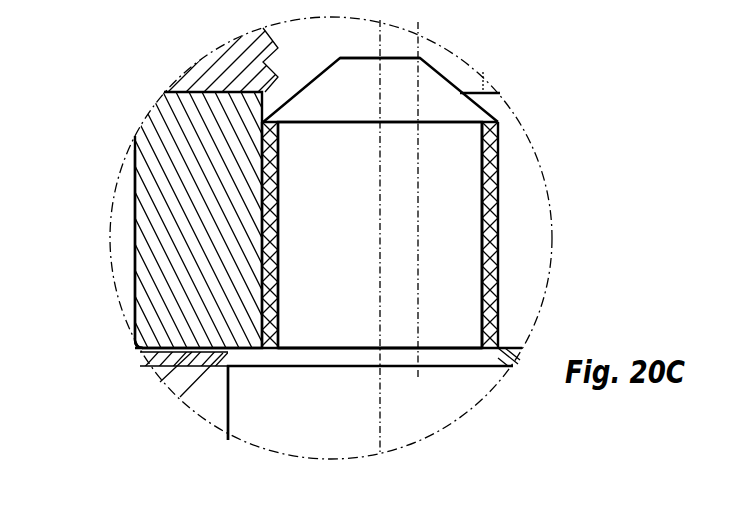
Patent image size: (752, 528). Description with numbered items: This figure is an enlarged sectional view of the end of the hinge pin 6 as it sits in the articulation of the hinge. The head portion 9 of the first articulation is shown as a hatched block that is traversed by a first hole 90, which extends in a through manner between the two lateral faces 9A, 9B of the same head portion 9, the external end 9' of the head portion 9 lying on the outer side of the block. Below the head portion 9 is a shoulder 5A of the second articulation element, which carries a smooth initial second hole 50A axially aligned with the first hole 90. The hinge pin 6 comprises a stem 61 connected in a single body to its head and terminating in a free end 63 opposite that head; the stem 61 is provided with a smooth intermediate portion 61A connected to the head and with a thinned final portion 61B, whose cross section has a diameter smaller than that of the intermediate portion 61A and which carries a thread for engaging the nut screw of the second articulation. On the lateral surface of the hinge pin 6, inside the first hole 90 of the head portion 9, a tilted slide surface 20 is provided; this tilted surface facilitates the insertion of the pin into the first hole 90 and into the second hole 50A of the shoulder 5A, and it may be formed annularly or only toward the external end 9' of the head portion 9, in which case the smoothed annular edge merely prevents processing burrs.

The head portion 9 is at (194, 214).
The external end of the head portion 9' is at (83, 245).
The lateral face of the head portion 9A is at (143, 355).
The lateral face of the head portion 9B is at (217, 92).
The shoulder 5A is at (173, 368).
The hinge pin 6 is at (257, 402).
The tilted slide surface 20 is at (437, 103).
The smooth initial second hole 50A is at (223, 378).
The stem 61 is at (442, 267).
The smooth intermediate portion 61A is at (430, 402).
The thinned final portion 61B is at (442, 237).
The free end 63 is at (393, 58).
The first hole 90 is at (517, 168).